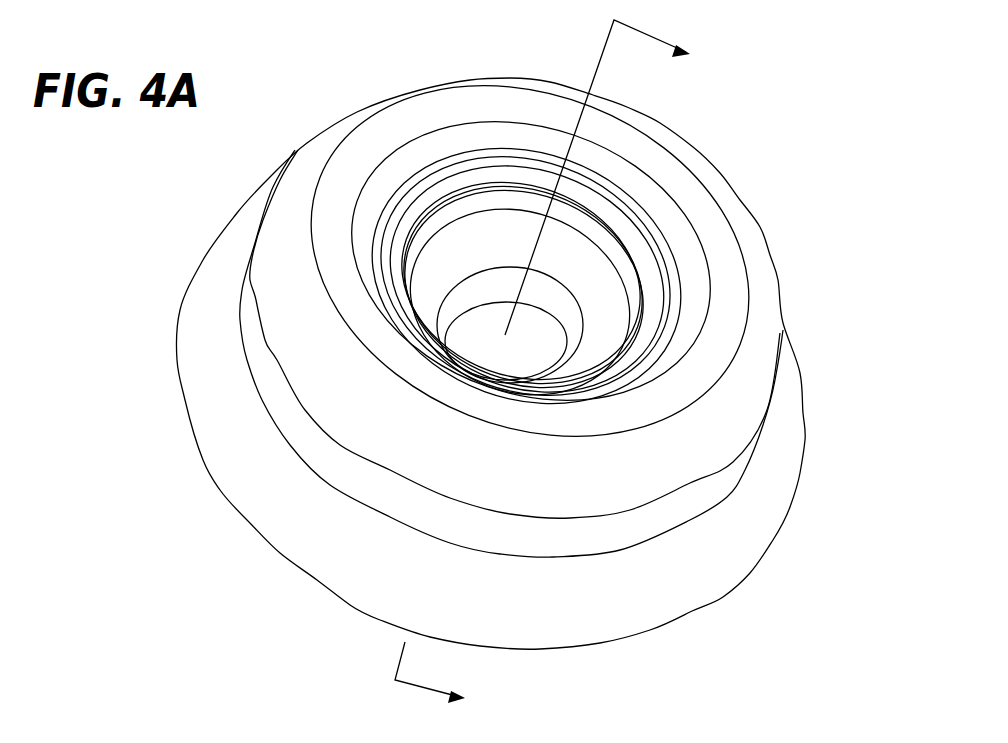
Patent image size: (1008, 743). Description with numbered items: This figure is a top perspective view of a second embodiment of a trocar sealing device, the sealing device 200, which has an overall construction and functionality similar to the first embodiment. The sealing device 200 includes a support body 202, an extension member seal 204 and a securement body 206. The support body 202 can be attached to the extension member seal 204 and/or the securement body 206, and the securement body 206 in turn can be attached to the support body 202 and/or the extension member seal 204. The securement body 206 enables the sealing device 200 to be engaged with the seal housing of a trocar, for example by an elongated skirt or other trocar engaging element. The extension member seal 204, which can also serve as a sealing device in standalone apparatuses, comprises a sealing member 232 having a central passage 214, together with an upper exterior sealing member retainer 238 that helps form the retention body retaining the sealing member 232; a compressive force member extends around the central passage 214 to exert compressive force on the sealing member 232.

The sealing device 200 is at (757, 166).
The support body 202 is at (740, 347).
The extension member seal 204 is at (596, 260).
The securement body 206 is at (190, 286).
The central passage 214 is at (488, 285).
The sealing member 232 is at (428, 285).
The upper exterior sealing member retainer 238 is at (427, 183).